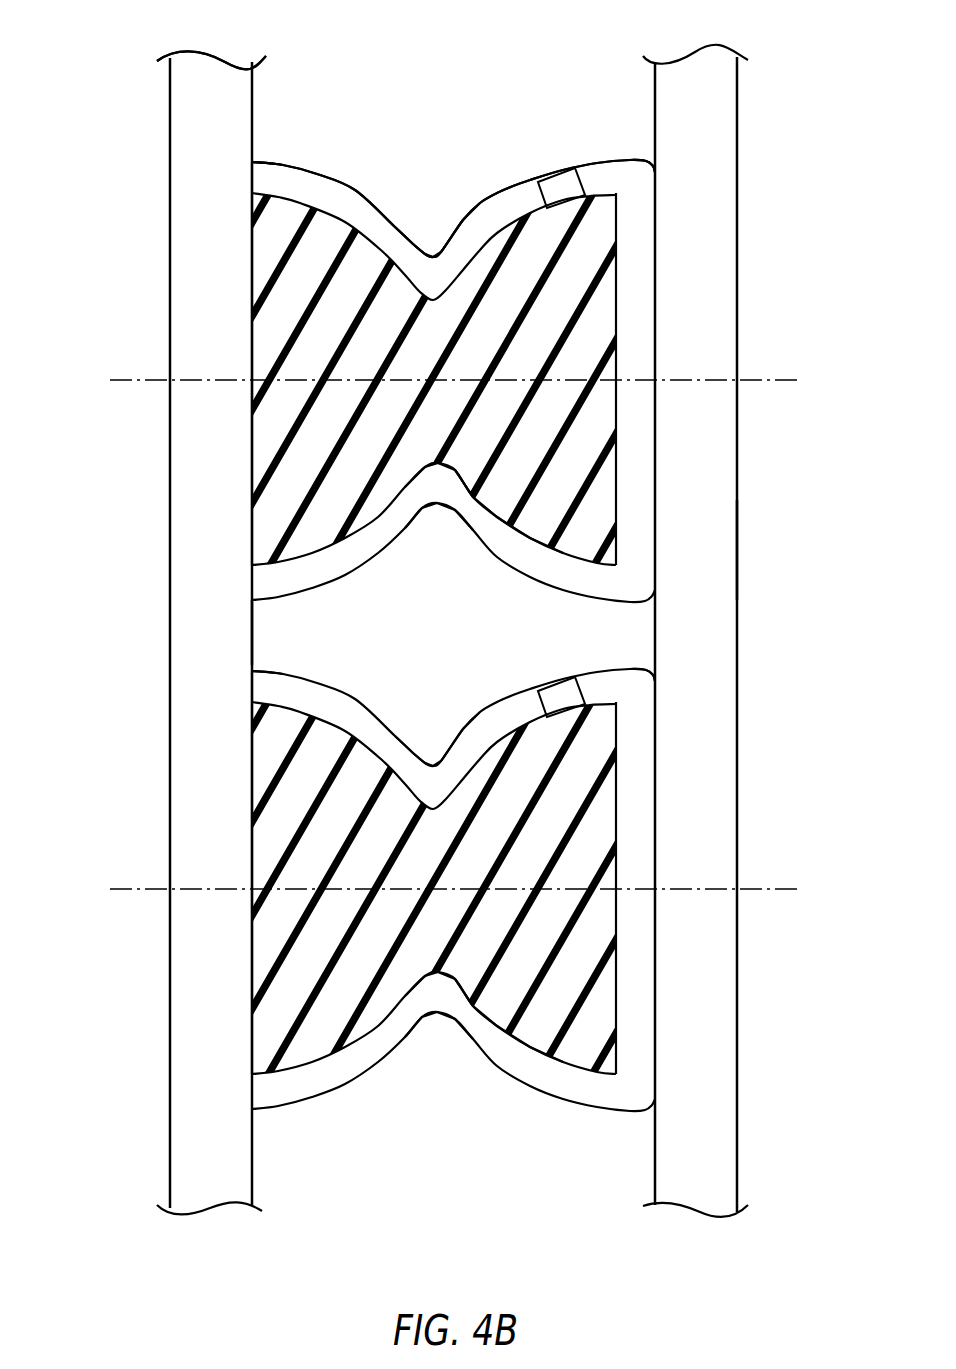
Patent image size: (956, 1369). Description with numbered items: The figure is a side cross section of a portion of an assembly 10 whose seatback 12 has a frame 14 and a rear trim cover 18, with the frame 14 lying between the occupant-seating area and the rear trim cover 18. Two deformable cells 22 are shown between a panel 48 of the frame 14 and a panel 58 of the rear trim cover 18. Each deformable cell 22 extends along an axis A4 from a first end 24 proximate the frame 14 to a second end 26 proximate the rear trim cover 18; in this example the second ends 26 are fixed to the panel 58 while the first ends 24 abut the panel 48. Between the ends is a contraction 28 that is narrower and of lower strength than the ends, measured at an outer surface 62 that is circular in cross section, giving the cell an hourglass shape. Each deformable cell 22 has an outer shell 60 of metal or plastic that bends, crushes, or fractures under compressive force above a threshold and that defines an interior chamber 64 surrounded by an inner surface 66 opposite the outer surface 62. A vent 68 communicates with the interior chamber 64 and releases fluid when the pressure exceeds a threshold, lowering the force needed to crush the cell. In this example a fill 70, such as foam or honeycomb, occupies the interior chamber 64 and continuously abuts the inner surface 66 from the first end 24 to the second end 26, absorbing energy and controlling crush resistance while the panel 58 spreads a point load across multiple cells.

The assembly 10 is at (80, 76).
The seatback 12 is at (334, 44).
The frame 14 is at (720, 228).
The rear trim cover 18 is at (169, 470).
The deformable cell 22 is at (327, 188).
The first end 24 is at (647, 162).
The second end 26 is at (257, 160).
The contraction 28 is at (432, 219).
The panel 48 is at (738, 545).
The panel 58 is at (195, 598).
The outer shell 60 is at (497, 547).
The outer surface 62 is at (453, 523).
The interior chamber 64 is at (478, 635).
The inner surface 66 is at (485, 502).
The vent 68 is at (555, 176).
The fill 70 is at (283, 290).
The axis A4 is at (772, 380).